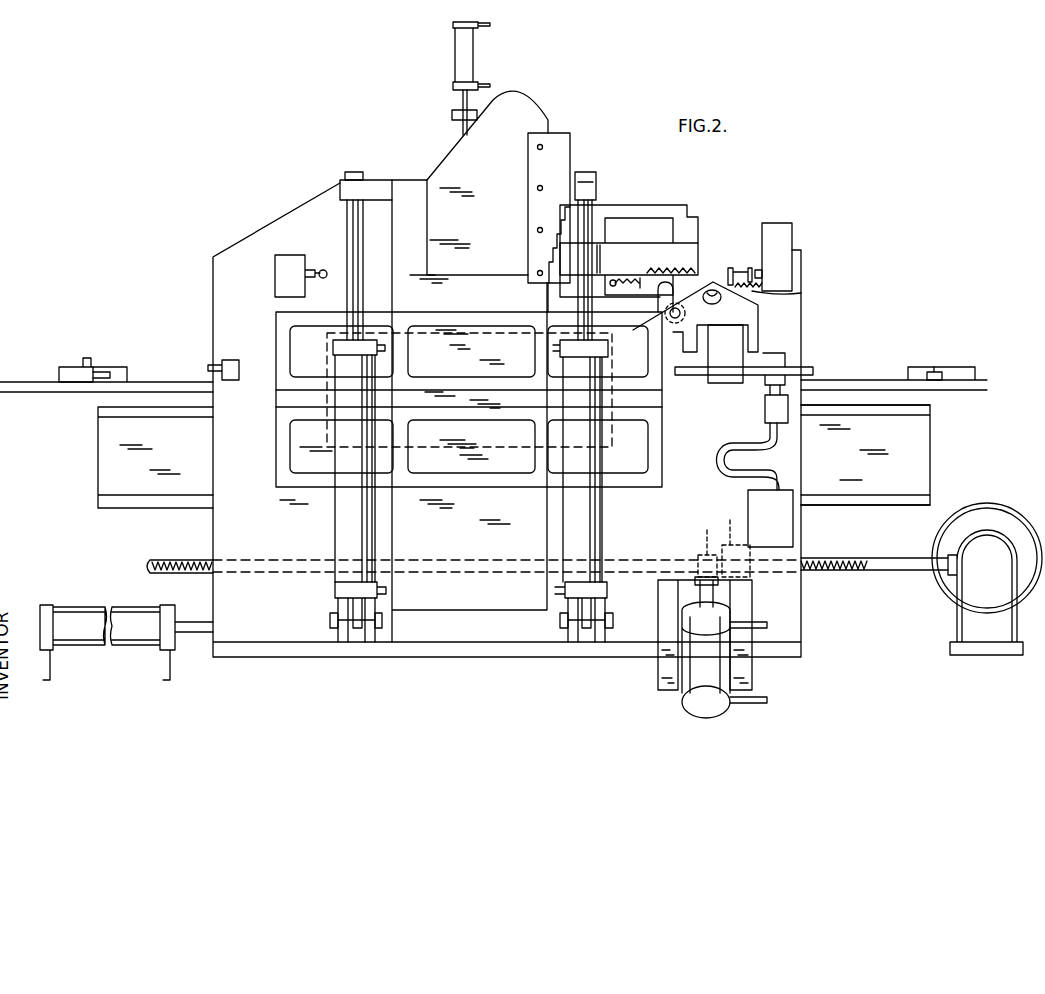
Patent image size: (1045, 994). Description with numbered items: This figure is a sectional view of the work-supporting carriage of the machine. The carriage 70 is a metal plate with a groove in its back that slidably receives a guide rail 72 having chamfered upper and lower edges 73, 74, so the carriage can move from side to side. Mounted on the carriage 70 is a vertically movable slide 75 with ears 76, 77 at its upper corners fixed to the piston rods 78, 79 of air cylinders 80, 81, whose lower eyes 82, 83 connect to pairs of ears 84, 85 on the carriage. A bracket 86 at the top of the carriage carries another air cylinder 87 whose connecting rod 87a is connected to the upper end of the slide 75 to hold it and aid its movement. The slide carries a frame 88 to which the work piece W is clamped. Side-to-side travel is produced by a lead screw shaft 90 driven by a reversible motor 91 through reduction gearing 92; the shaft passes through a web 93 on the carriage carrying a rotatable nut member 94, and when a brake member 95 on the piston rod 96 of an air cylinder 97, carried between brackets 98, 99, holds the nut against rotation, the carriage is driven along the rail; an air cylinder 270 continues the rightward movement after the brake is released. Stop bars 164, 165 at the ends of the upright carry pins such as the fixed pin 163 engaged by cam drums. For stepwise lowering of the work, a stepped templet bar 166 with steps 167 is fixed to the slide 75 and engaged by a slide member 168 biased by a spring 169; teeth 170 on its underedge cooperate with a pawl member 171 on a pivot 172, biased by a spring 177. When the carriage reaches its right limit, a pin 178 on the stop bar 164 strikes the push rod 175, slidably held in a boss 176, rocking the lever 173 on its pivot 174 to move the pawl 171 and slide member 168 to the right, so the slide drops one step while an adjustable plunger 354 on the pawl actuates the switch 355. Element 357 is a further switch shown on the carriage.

The carriage 70 is at (222, 533).
The guide rail 72 is at (930, 452).
The chamfered upper edge 73 is at (930, 410).
The chamfered lower edge 74 is at (878, 505).
The slide 75 is at (472, 610).
The ear 76 is at (346, 188).
The ear 77 is at (596, 184).
The piston rod 78 is at (350, 238).
The piston rod 79 is at (592, 215).
The air cylinder 80 is at (338, 530).
The air cylinder 81 is at (597, 527).
The eye 82 is at (358, 642).
The eye 83 is at (588, 632).
The pair of ears 84 is at (372, 640).
The pair of ears 85 is at (572, 642).
The bracket 86 is at (452, 115).
The air cylinder 87 is at (456, 52).
The connecting rod 87a is at (463, 133).
The frame 88 is at (477, 322).
The lead screw shaft 90 is at (858, 572).
The motor 91 is at (995, 505).
The reduction gearing 92 is at (964, 622).
The web 93 is at (733, 540).
The nut member 94 is at (703, 548).
The brake member 95 is at (694, 580).
The piston rod 96 is at (700, 600).
The air cylinder 97 is at (707, 718).
The bracket 98 is at (660, 676).
The bracket 99 is at (752, 676).
The fixed pin 163 is at (88, 358).
The stop bar 164 is at (964, 367).
The stop bar 165 is at (120, 368).
The stepped templet bar 166 is at (531, 170).
The steps 167 is at (560, 230).
The slide member 168 is at (590, 258).
The spring 169 is at (630, 276).
The teeth 170 is at (672, 265).
The pawl member 171 is at (705, 282).
The pivot 172 is at (712, 304).
The lever 173 is at (662, 298).
The pivot 174 is at (672, 320).
The push rod 175 is at (813, 370).
The bracket or boss 176 is at (725, 383).
The spring 177 is at (801, 294).
The pin 178 is at (934, 370).
The air cylinder 270 is at (90, 607).
The adjustable plunger 354 is at (750, 265).
The switch 355 is at (792, 223).
The switch 357 is at (230, 362).
The work piece W is at (327, 437).